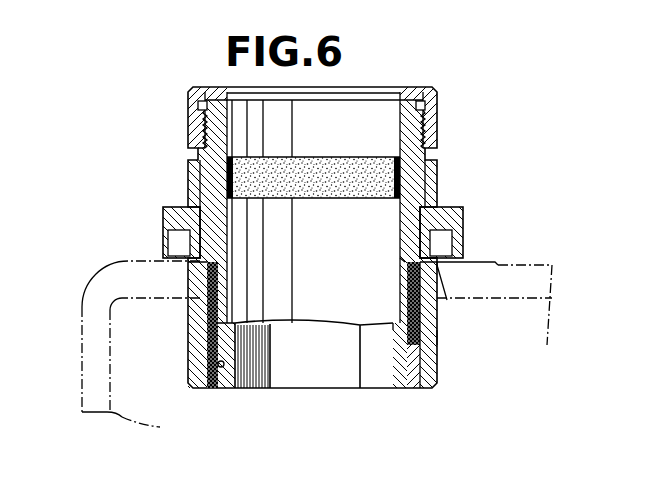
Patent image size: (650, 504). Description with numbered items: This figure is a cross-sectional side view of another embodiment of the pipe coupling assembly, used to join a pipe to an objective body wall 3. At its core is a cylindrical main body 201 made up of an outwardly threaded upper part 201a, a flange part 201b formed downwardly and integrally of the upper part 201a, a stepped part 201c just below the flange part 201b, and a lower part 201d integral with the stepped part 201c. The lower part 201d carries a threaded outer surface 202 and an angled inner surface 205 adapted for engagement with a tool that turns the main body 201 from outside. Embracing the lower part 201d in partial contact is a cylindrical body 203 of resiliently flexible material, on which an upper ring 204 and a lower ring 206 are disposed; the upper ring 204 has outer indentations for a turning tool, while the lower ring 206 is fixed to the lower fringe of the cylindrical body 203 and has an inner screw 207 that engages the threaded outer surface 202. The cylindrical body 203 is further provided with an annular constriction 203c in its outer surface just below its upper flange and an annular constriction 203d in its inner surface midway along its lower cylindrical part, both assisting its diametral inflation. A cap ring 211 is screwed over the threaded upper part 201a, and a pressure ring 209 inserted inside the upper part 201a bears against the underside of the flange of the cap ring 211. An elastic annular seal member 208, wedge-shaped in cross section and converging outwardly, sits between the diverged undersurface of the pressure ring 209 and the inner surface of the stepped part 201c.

The objective body wall 3 is at (94, 278).
The cylindrical main body 201 is at (436, 173).
The outwardly threaded upper part 201a is at (440, 117).
The flange part 201b is at (438, 200).
The stepped part 201c is at (196, 203).
The lower part 201d is at (402, 262).
The threaded outer surface 202 is at (210, 300).
The cylindrical body 203 is at (437, 317).
The annular constriction 203c is at (438, 268).
The annular constriction 203d is at (433, 337).
The upper ring 204 is at (460, 220).
The angled inner surface 205 is at (317, 386).
The lower ring 206 is at (212, 388).
The inner screw 207 is at (218, 366).
The annular seal member 208 is at (222, 182).
The pressure ring 209 is at (215, 133).
The cap ring 211 is at (410, 92).